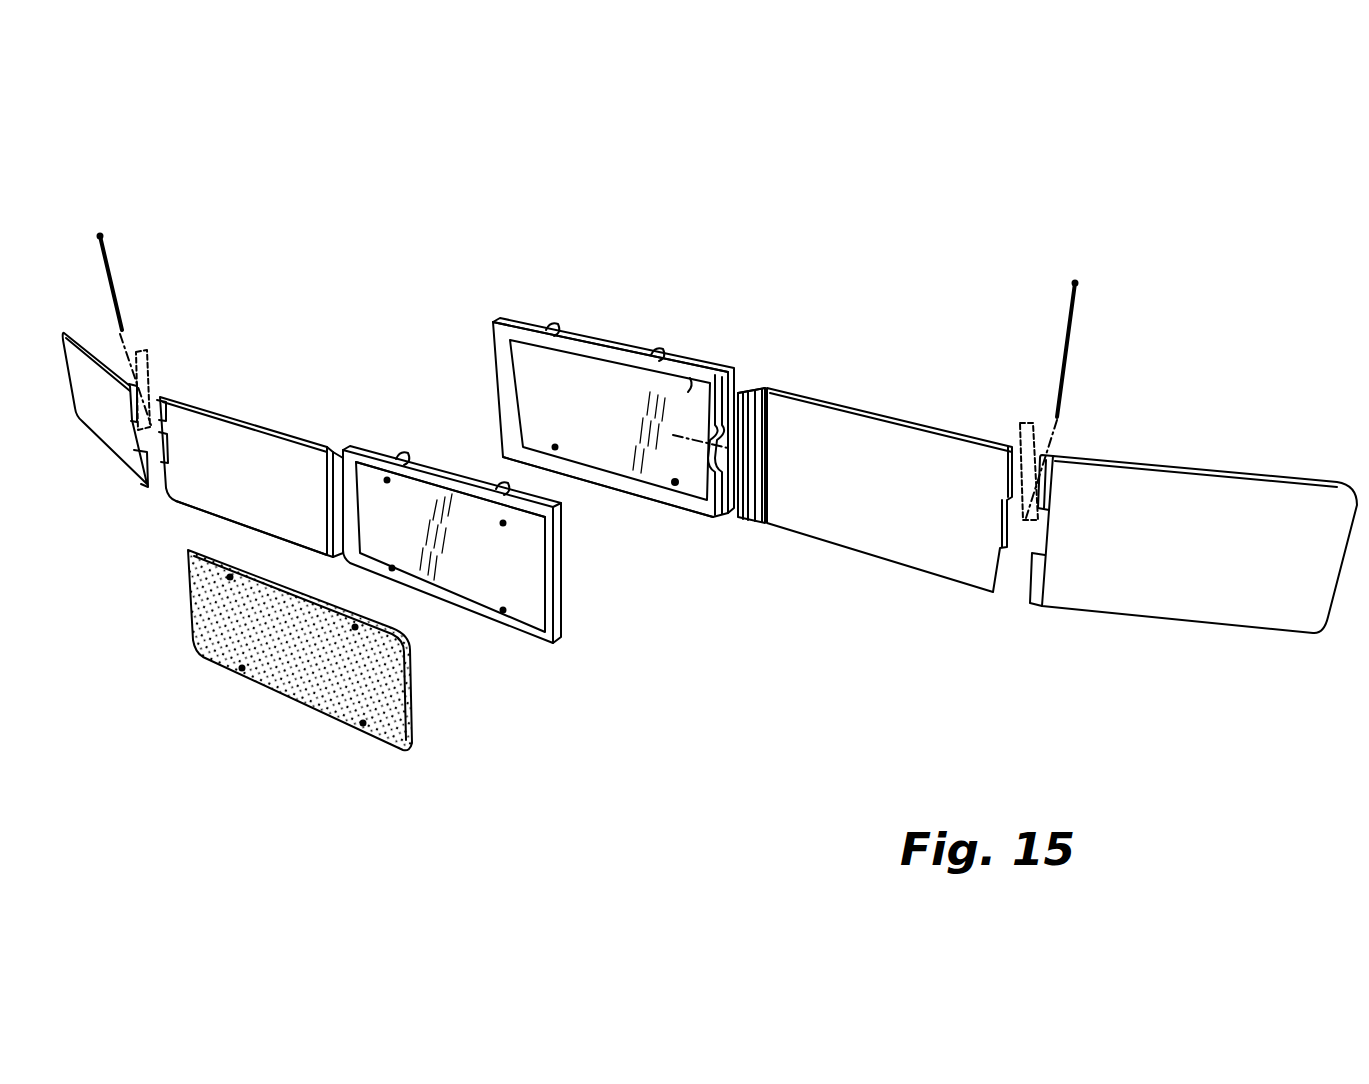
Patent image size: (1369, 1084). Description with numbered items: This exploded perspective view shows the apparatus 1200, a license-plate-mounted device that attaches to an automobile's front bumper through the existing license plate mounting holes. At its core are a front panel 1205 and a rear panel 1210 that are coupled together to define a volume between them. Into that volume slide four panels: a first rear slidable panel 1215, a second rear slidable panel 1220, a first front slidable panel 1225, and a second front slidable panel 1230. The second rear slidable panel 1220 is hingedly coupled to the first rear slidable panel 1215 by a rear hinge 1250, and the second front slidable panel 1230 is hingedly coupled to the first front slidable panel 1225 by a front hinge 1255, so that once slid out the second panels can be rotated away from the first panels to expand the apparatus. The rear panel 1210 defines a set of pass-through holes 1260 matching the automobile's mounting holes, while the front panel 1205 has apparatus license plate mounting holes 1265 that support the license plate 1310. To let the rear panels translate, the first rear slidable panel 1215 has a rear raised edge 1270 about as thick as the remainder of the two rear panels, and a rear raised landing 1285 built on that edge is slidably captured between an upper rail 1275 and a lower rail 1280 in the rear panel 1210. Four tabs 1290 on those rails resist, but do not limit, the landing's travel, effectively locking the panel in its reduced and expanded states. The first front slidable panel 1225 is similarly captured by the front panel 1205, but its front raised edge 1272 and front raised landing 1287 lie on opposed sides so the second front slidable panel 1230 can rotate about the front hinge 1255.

The apparatus 1200 is at (895, 213).
The front panel 1205 is at (480, 595).
The rear panel 1210 is at (470, 368).
The first rear slidable panel 1215 is at (867, 435).
The second rear slidable panel 1220 is at (1202, 510).
The first front slidable panel 1225 is at (240, 450).
The second front slidable panel 1230 is at (107, 433).
The rear hinge 1250 is at (1031, 398).
The front hinge 1255 is at (160, 356).
The pass-through holes 1260 is at (675, 484).
The apparatus license plate mounting holes 1265 is at (385, 487).
The rear raised edge 1270 is at (750, 525).
The front raised edge 1272 is at (310, 527).
The upper rail 1275 is at (518, 337).
The lower rail 1280 is at (603, 480).
The rear raised landing 1285 is at (745, 392).
The front raised landing 1287 is at (333, 450).
The tabs 1290 is at (682, 390).
The license plate 1310 is at (287, 677).